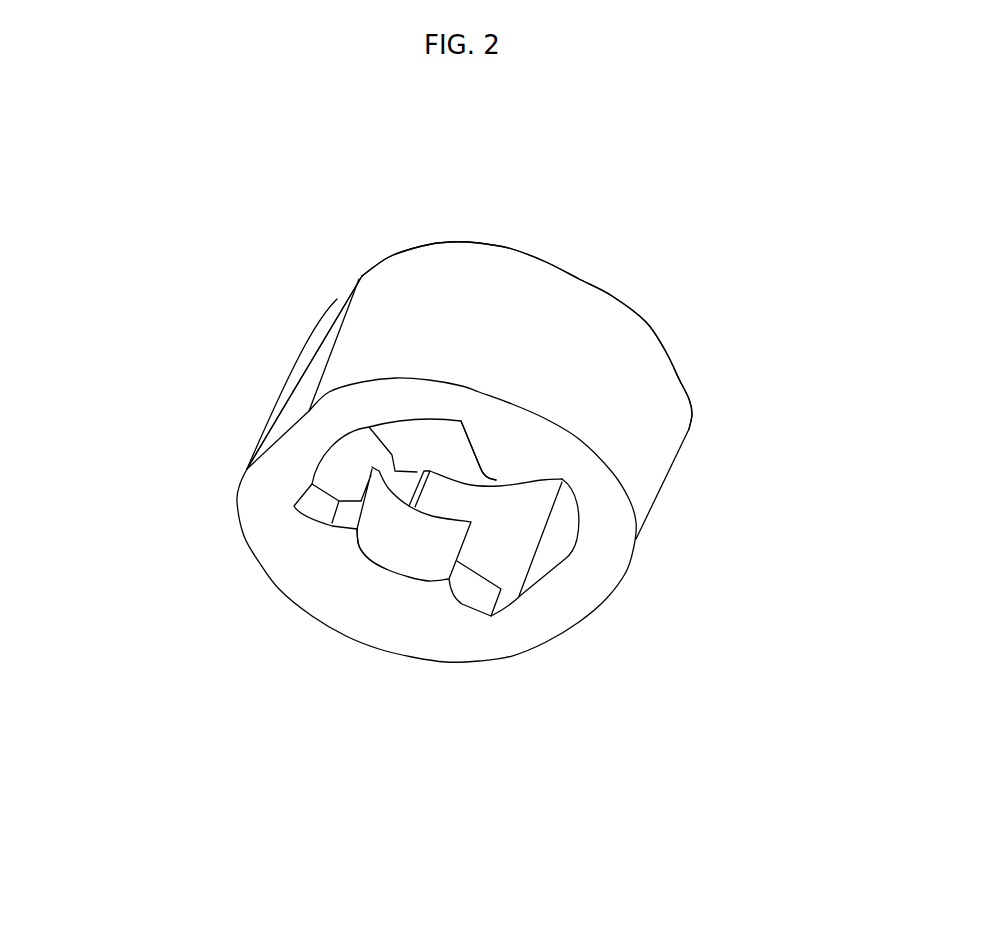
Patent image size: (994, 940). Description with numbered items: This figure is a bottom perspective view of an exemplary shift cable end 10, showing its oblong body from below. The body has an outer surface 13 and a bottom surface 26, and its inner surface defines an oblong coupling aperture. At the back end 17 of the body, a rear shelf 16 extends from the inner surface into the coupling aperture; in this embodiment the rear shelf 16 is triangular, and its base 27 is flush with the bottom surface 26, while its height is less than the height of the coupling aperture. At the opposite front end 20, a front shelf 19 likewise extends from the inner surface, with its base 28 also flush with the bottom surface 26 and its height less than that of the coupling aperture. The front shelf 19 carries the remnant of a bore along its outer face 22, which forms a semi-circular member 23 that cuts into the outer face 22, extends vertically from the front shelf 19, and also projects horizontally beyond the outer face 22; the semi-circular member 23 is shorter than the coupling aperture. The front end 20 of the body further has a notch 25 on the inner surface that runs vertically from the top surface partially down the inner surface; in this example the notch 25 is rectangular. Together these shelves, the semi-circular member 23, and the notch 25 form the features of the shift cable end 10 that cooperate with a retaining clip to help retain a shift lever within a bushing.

The shift cable end 10 is at (225, 340).
The outer surface 13 is at (327, 335).
The rear shelf 16 is at (480, 440).
The back end 17 is at (556, 330).
The front shelf 19 is at (462, 605).
The front end 20 is at (320, 620).
The outer face 22 is at (313, 503).
The semi-circular member 23 is at (417, 547).
The notch 25 is at (402, 482).
The bottom surface 26 is at (258, 515).
The base 27 is at (508, 462).
The base 28 is at (350, 553).